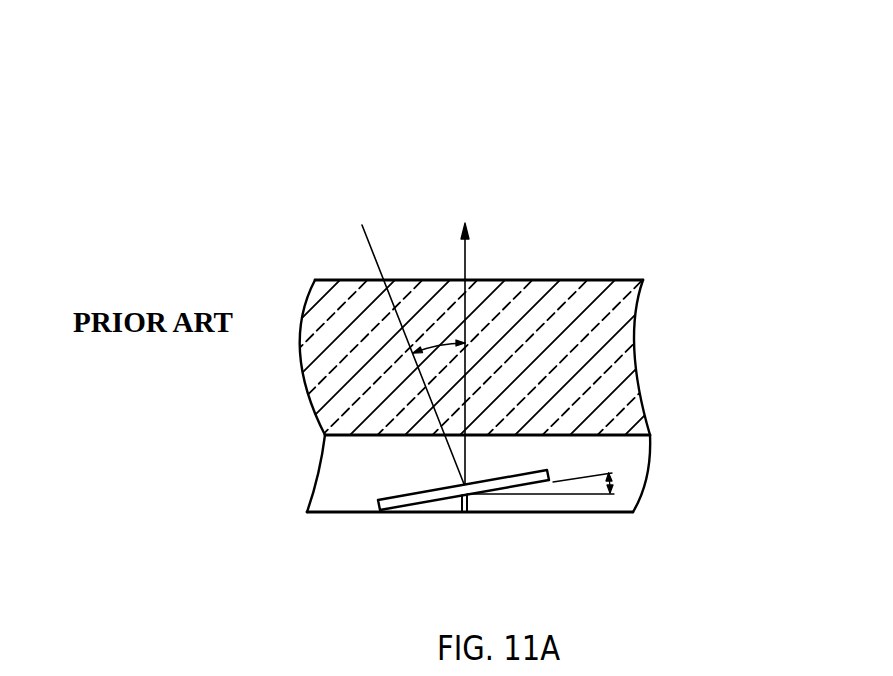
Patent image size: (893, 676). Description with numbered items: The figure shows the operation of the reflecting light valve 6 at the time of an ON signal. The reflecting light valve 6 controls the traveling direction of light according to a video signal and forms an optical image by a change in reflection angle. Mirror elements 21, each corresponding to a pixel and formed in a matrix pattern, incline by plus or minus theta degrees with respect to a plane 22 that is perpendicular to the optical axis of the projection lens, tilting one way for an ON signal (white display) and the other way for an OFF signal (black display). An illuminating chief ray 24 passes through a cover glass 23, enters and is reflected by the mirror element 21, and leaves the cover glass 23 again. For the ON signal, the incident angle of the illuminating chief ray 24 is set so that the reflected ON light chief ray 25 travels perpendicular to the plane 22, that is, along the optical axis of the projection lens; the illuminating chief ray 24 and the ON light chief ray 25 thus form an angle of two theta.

The reflecting light valve 6 is at (637, 150).
The mirror element 21 is at (394, 510).
The plane 22 is at (563, 512).
The cover glass 23 is at (560, 283).
The illuminating chief ray 24 is at (373, 257).
The ON light chief ray 25 is at (467, 258).